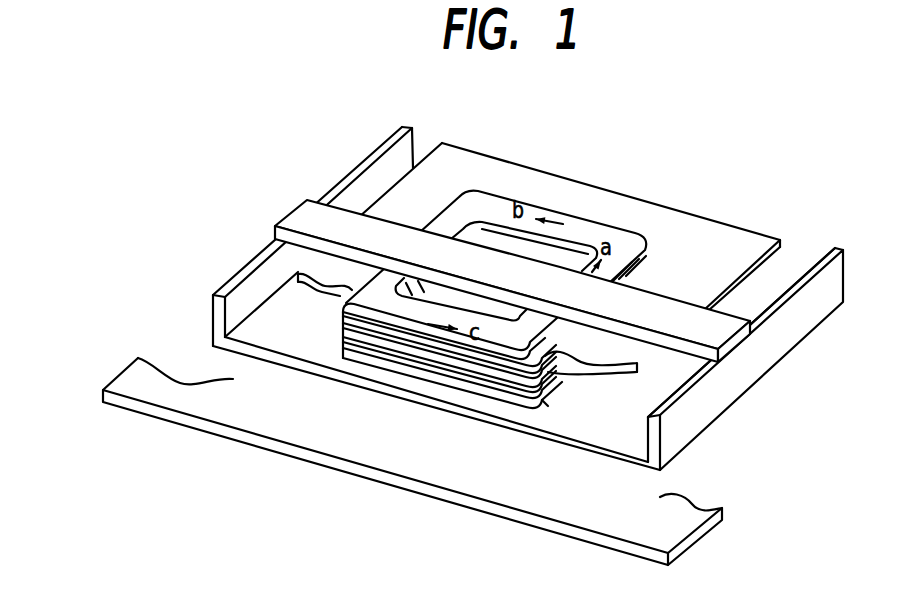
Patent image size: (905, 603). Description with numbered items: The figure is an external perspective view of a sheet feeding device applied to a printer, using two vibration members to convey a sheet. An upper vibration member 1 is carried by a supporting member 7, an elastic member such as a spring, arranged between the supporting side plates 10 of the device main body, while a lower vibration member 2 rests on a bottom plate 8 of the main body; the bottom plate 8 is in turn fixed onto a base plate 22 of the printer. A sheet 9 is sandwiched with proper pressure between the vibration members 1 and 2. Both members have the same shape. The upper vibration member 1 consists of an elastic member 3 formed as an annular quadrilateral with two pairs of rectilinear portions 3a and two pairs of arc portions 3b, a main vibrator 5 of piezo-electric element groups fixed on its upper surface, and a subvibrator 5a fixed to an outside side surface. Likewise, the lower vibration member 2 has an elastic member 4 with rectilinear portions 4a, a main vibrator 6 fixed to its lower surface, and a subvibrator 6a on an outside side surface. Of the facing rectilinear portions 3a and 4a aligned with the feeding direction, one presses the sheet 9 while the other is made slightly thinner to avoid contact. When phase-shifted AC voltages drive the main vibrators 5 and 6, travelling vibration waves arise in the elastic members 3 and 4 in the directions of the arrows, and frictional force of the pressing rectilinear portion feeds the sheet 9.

The upper vibration member 1 is at (331, 309).
The lower vibration member 2 is at (558, 397).
The elastic member 3 is at (642, 258).
The rectilinear portions 3a is at (548, 365).
The arc portions 3b is at (336, 330).
The elastic member 4 is at (492, 392).
The rectilinear portions 4a is at (545, 378).
The main vibrator 5 is at (612, 238).
The subvibrator 5a is at (393, 342).
The main vibrator 6 is at (536, 397).
The subvibrator 6a is at (410, 367).
The supporting member 7 is at (679, 314).
The bottom plate 8 is at (631, 440).
The sheet 9 is at (555, 188).
The supporting side plates 10 is at (214, 315).
The base plate 22 is at (690, 530).